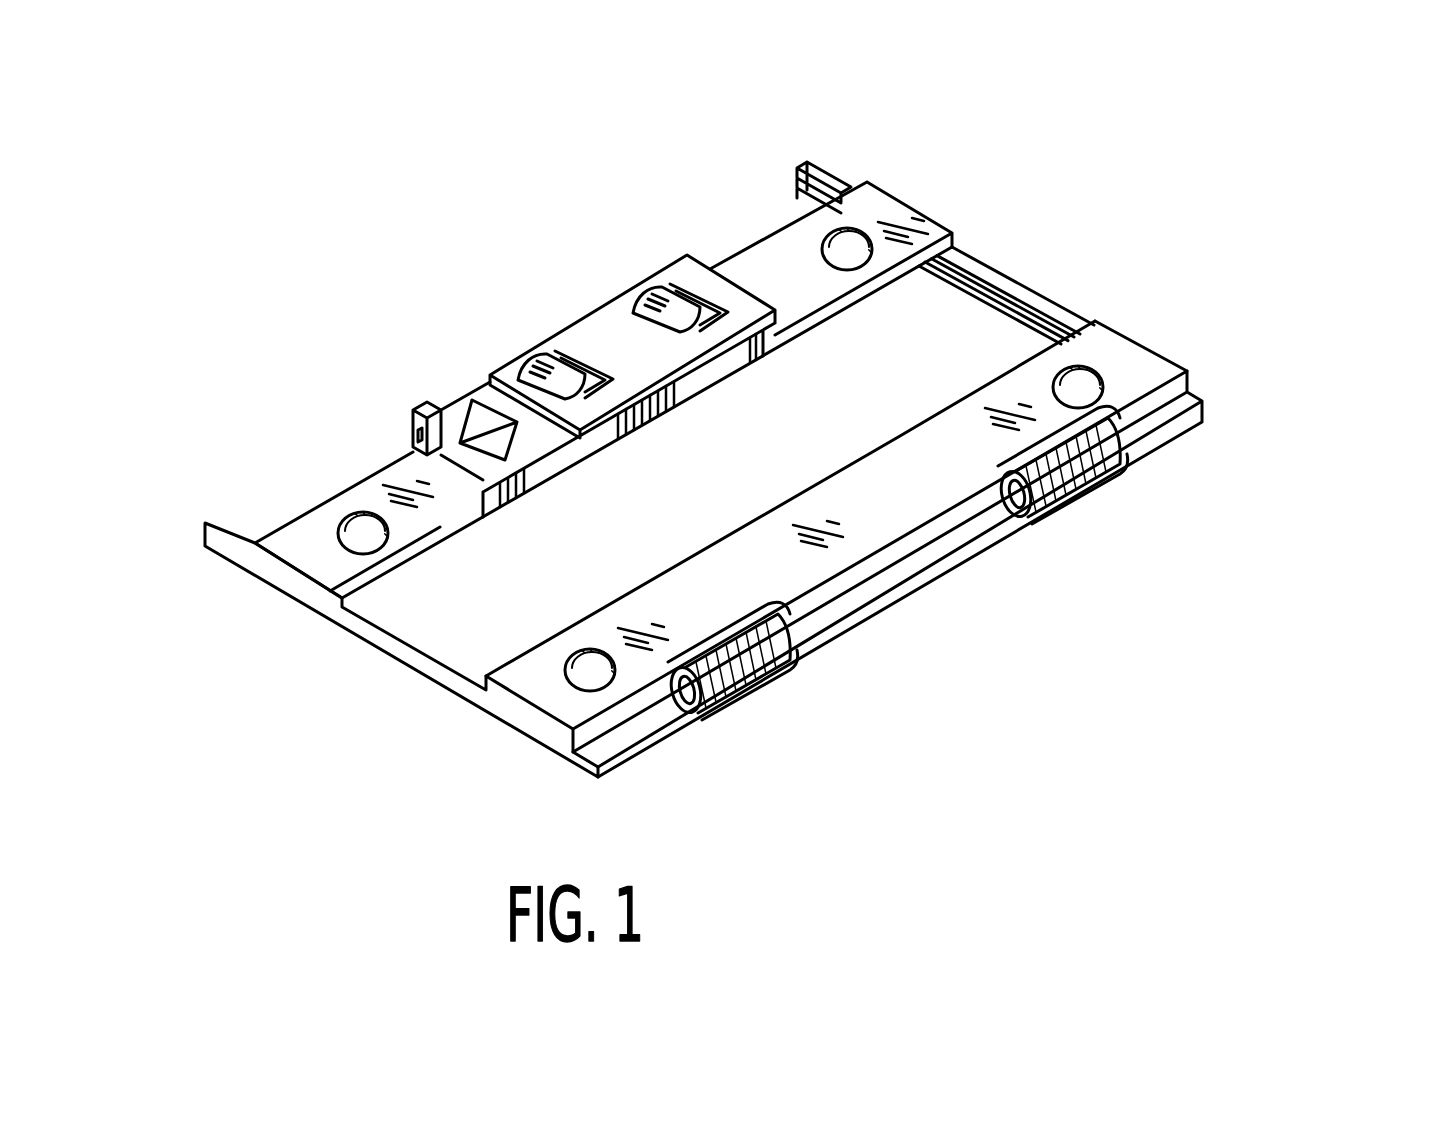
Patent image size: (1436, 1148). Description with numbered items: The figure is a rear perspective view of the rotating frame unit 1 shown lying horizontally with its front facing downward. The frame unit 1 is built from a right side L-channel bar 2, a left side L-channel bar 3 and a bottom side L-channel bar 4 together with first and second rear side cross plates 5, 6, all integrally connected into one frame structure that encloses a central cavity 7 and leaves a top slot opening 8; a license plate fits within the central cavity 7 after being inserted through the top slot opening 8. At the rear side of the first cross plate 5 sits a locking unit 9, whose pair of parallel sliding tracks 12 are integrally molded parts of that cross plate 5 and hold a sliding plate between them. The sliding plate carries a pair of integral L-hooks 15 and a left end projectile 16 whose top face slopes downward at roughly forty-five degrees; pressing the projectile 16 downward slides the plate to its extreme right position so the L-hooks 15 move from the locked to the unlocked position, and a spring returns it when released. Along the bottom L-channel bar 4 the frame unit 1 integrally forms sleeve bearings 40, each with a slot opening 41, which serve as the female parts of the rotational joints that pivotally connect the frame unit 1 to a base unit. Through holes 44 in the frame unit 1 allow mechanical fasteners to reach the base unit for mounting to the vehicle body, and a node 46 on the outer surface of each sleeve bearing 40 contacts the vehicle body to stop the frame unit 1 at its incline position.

The frame unit 1 is at (902, 598).
The right side L-channel bar 2 is at (980, 256).
The left side L-channel bar 3 is at (377, 652).
The bottom side L-channel bar 4 is at (1200, 410).
The first rear side cross plate 5 is at (797, 273).
The second rear side cross plate 6 is at (1150, 348).
The central cavity 7 is at (530, 563).
The top slot opening 8 is at (793, 212).
The locking unit 9 is at (623, 337).
The sliding tracks 12 is at (430, 413).
The L-hooks 15 is at (665, 287).
The left end projectile 16 is at (473, 437).
The sleeve bearing 40 is at (697, 712).
The slot opening 41 is at (798, 648).
The through holes 44 is at (353, 517).
The node 46 is at (793, 647).